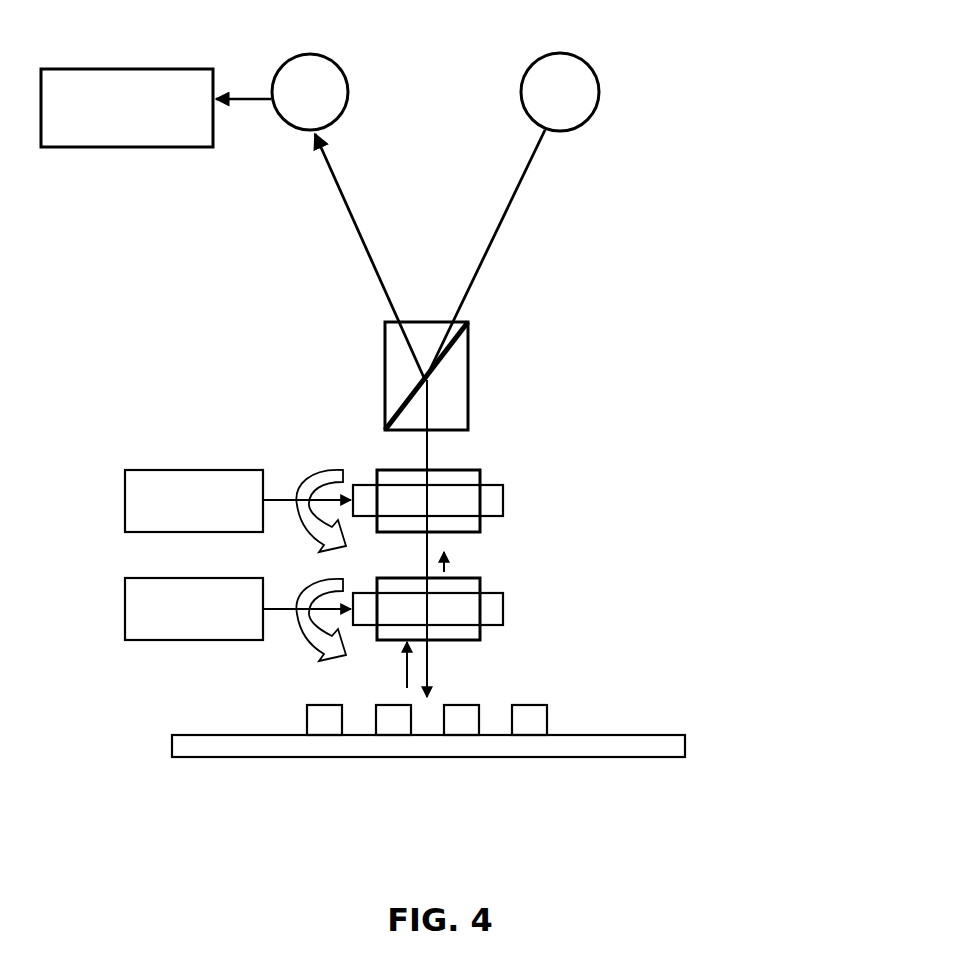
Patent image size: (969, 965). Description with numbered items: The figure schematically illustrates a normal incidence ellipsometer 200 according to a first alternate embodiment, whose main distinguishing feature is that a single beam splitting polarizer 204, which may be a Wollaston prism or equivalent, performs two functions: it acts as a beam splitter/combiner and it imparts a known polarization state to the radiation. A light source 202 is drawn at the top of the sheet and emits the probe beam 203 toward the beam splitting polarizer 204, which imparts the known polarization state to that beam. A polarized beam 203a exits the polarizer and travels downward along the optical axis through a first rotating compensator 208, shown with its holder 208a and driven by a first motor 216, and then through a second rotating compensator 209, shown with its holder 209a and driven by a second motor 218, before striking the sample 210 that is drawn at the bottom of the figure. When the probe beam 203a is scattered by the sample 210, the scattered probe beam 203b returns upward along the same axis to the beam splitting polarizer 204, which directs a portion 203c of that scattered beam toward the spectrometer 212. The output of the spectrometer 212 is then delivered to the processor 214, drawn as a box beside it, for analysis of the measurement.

The normal incidence ellipsometer 200 is at (727, 350).
The light source 202 is at (598, 82).
The probe beam 203 is at (505, 222).
The polarized beam 203a is at (433, 456).
The scattered probe beam 203b is at (406, 672).
The portion of the scattered probe beam 203c is at (358, 232).
The beam splitting polarizer 204 is at (383, 375).
The first rotating compensator 208 is at (503, 492).
The first lens holder 208a is at (468, 470).
The second rotating compensator 209 is at (503, 609).
The second lens holder 209a is at (468, 578).
The sample 210 is at (193, 757).
The spectrometer 212 is at (327, 58).
The processor 214 is at (150, 136).
The first motor 216 is at (183, 470).
The motor 218 is at (200, 640).